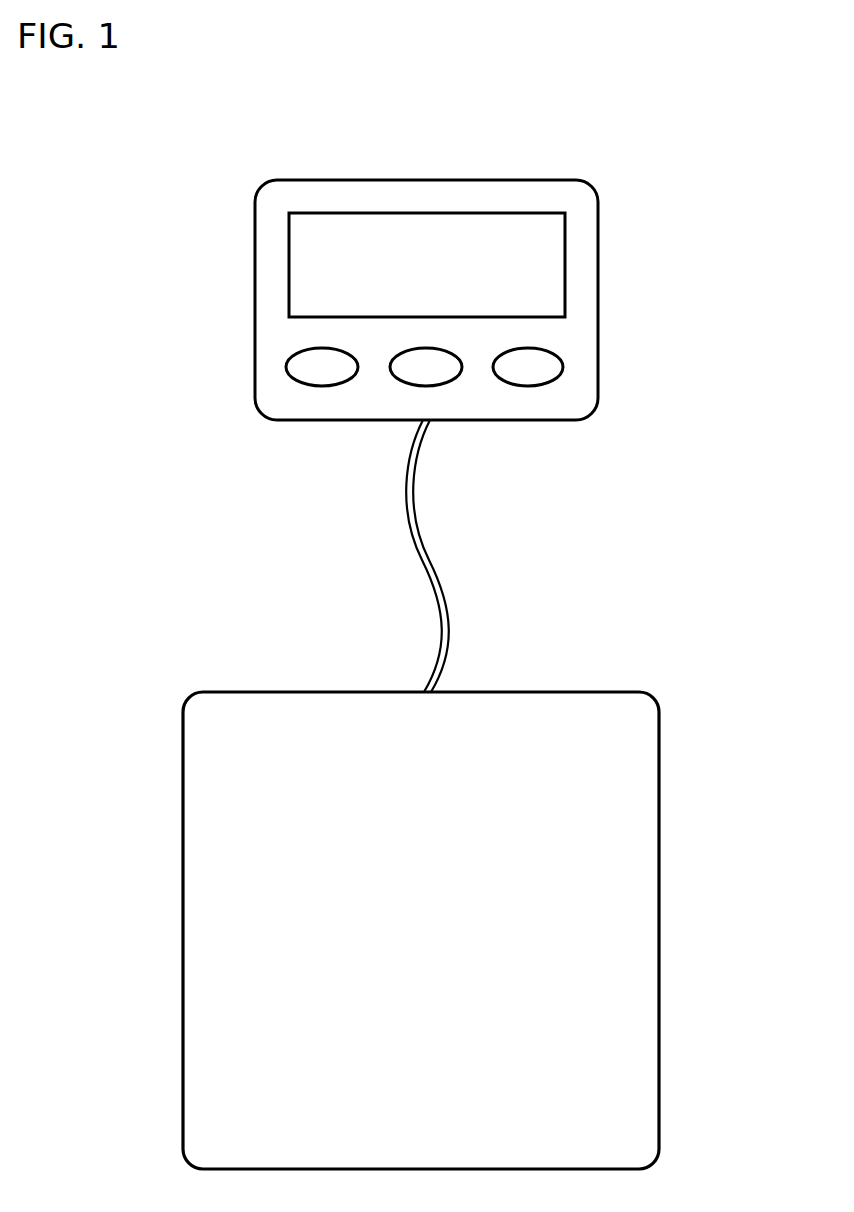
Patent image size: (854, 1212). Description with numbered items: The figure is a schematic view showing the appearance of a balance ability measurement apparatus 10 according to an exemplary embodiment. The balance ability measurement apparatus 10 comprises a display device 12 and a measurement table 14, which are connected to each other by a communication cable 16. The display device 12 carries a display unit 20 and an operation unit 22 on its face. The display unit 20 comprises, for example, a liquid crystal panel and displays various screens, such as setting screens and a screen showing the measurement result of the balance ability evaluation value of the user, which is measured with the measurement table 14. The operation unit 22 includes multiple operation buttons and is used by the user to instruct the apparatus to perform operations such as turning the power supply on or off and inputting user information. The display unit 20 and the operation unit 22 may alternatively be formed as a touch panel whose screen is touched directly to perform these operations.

The balance ability measurement apparatus 10 is at (764, 342).
The display device 12 is at (598, 240).
The measurement table 14 is at (660, 928).
The communication cable 16 is at (430, 547).
The display unit 20 is at (468, 213).
The operation unit 22 is at (383, 389).